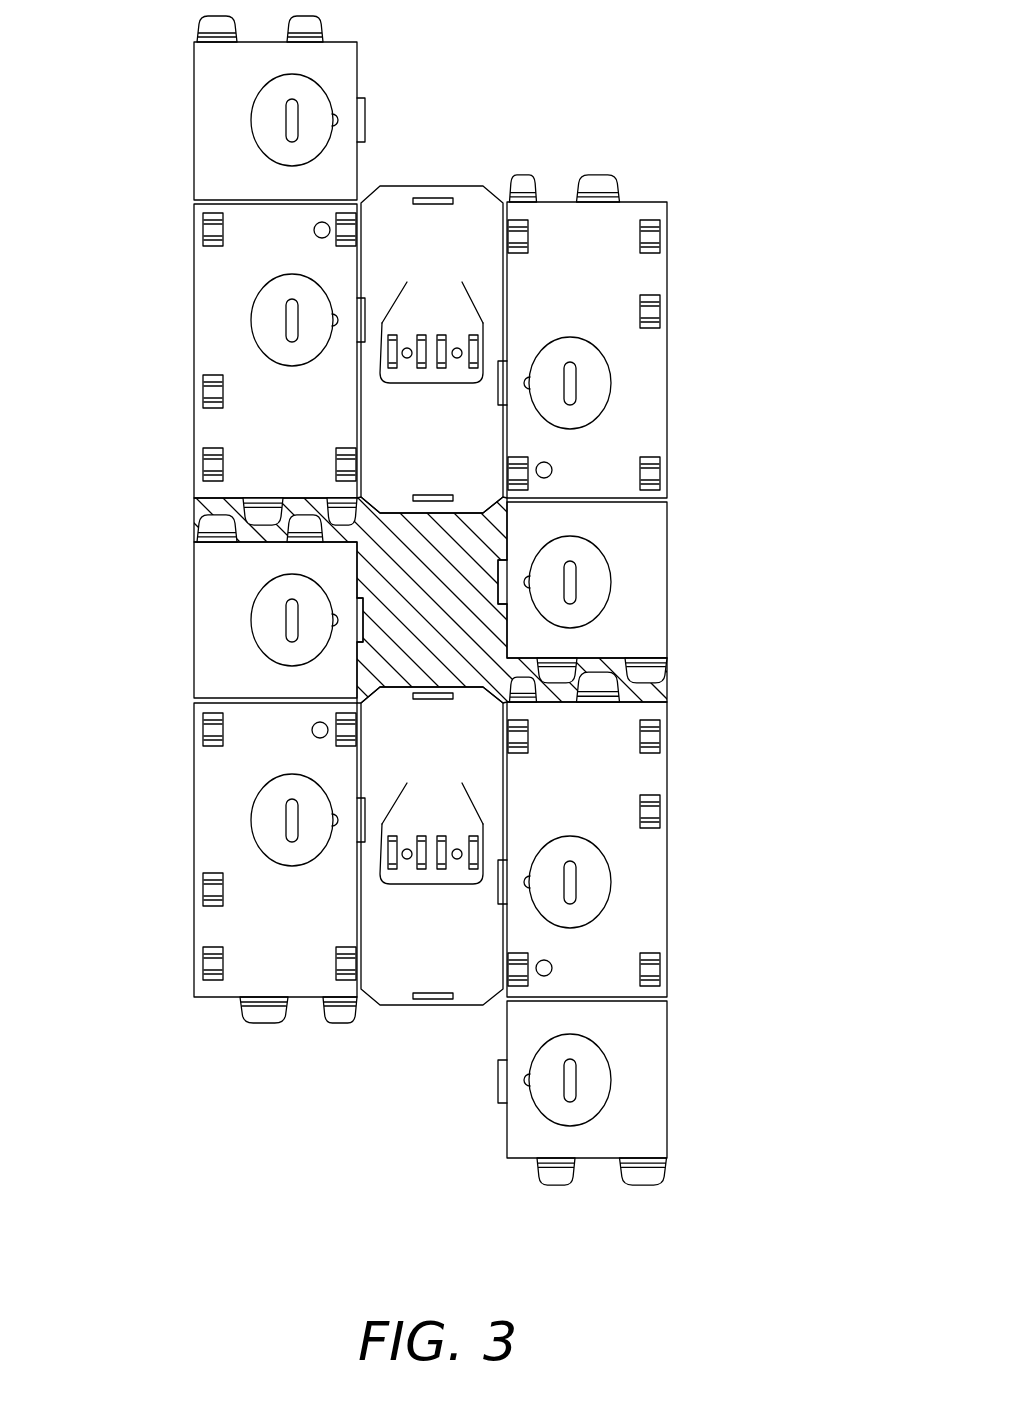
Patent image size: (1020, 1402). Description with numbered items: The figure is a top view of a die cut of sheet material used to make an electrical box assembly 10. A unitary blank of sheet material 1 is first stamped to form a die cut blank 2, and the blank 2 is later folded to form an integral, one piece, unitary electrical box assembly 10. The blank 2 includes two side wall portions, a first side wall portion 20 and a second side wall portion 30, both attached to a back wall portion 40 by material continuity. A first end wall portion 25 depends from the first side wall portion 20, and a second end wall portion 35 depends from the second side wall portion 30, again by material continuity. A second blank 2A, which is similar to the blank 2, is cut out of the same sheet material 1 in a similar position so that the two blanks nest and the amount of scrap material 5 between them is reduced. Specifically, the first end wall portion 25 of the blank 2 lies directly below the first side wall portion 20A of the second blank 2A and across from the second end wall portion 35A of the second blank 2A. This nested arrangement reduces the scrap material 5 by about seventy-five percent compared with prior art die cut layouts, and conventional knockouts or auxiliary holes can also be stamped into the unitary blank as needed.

The sheet material 1 is at (180, 518).
The die cut blank 2 is at (644, 849).
The second blank 2A is at (668, 275).
The scrap material 5 is at (467, 622).
The electrical box assembly 10 is at (685, 848).
The first side wall portion 20 is at (235, 927).
The first side wall portion of second blank 20A is at (193, 358).
The first end wall portion 25 is at (220, 673).
The second side wall portion 30 is at (635, 915).
The second end wall portion 35 is at (620, 1070).
The second end wall portion of second blank 35A is at (668, 533).
The back wall portion 40 is at (380, 765).